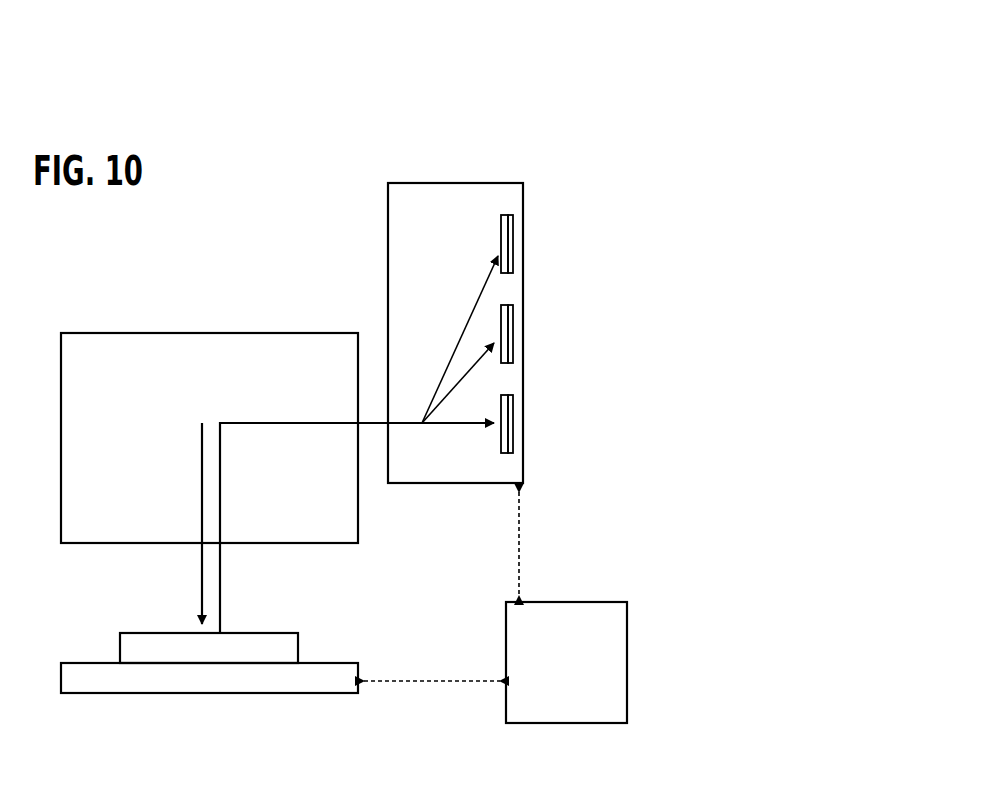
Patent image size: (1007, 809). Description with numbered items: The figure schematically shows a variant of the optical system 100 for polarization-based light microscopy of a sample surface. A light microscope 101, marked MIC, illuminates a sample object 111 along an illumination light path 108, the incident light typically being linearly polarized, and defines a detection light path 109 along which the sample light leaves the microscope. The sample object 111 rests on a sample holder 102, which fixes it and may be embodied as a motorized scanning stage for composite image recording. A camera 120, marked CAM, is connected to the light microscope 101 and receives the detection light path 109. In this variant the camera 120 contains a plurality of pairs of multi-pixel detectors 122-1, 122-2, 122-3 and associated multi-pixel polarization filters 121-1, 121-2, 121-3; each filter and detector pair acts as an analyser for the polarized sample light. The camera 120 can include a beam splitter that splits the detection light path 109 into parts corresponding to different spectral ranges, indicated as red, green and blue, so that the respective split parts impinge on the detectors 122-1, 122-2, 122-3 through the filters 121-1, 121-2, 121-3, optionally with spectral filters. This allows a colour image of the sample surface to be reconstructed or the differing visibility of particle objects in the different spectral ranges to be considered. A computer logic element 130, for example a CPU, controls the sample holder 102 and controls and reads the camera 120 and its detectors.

The optical system 100 is at (636, 60).
The light microscope 101 is at (83, 339).
The sample holder 102 is at (83, 668).
The illumination light path 108 is at (200, 462).
The detection light path 109 is at (222, 478).
The sample object 111 is at (133, 638).
The camera 120 is at (457, 193).
The multi-pixel polarization filter 121-1 is at (508, 443).
The multi-pixel polarization filter 121-2 is at (508, 353).
The multi-pixel polarization filter 121-3 is at (508, 263).
The multi-pixel detector 122-1 is at (513, 403).
The multi-pixel detector 122-2 is at (513, 313).
The multi-pixel detector 122-3 is at (513, 223).
The computer logic element 130 is at (609, 613).